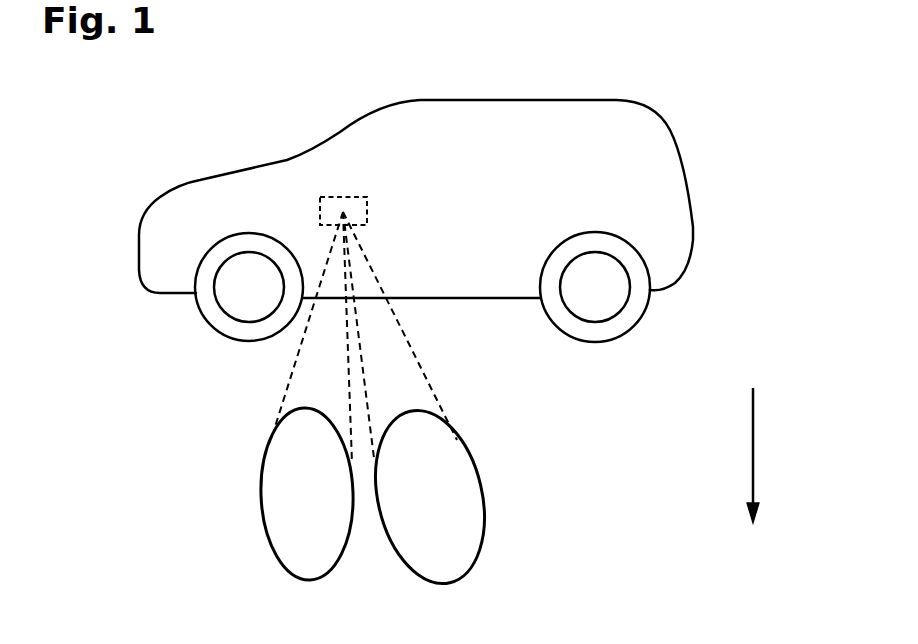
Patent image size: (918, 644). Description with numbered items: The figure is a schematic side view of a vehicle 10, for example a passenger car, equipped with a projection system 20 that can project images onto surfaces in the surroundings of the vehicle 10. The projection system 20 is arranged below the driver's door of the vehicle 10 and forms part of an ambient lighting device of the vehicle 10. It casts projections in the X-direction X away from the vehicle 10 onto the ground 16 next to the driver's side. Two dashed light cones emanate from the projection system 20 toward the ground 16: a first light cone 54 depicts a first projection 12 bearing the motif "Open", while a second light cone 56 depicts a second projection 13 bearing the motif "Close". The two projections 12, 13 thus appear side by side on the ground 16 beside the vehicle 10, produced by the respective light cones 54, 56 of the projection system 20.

The vehicle 10 is at (238, 120).
The projection system 20 is at (338, 197).
The first light cone 54 is at (288, 385).
The second light cone 56 is at (423, 372).
The ground 16 is at (541, 462).
The first projection 12 is at (261, 496).
The second projection 13 is at (488, 530).
The X-direction X is at (753, 462).